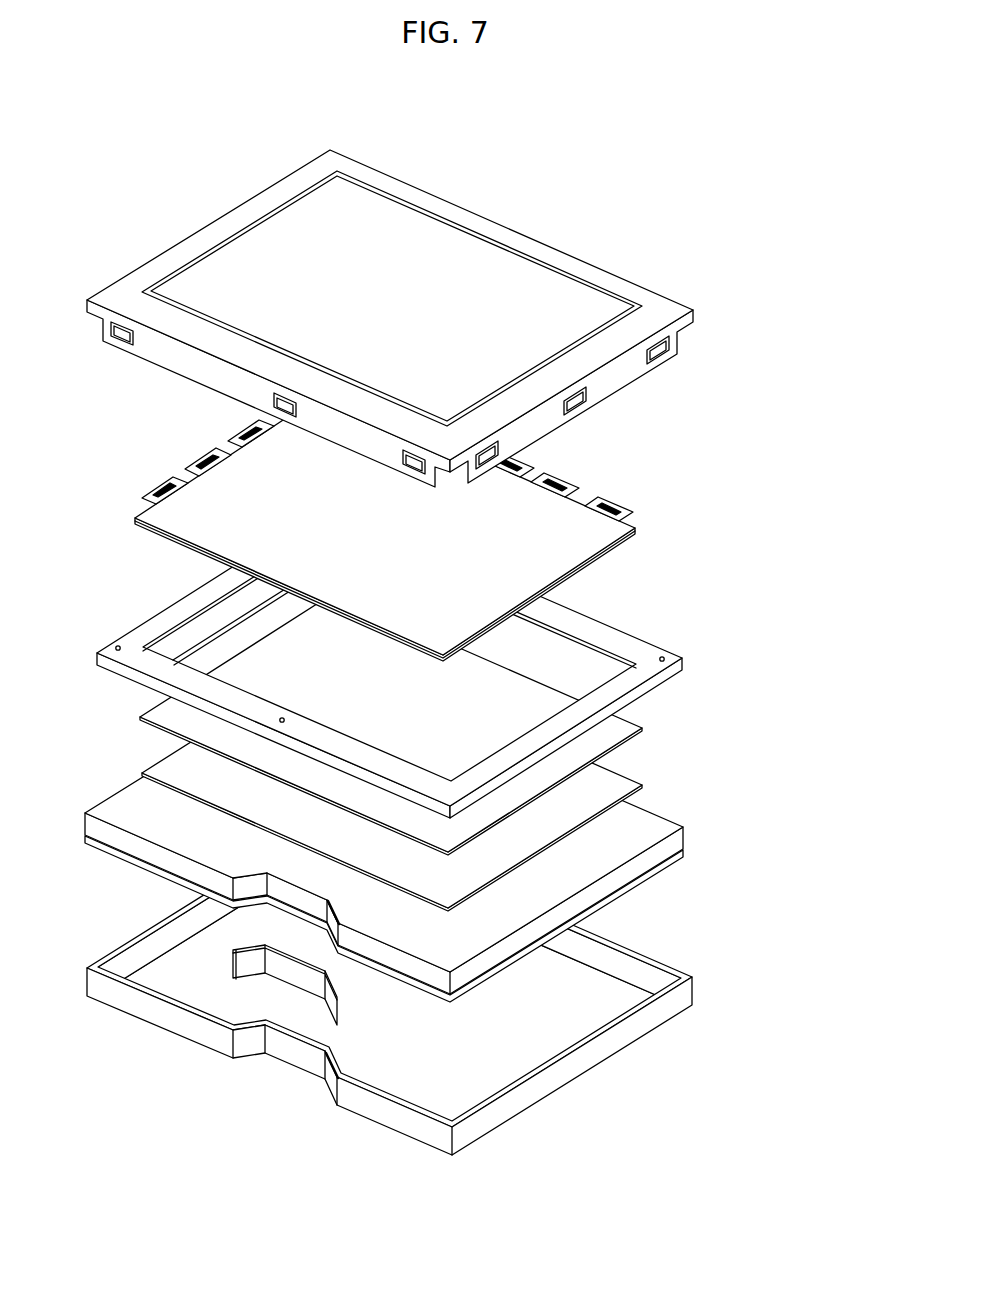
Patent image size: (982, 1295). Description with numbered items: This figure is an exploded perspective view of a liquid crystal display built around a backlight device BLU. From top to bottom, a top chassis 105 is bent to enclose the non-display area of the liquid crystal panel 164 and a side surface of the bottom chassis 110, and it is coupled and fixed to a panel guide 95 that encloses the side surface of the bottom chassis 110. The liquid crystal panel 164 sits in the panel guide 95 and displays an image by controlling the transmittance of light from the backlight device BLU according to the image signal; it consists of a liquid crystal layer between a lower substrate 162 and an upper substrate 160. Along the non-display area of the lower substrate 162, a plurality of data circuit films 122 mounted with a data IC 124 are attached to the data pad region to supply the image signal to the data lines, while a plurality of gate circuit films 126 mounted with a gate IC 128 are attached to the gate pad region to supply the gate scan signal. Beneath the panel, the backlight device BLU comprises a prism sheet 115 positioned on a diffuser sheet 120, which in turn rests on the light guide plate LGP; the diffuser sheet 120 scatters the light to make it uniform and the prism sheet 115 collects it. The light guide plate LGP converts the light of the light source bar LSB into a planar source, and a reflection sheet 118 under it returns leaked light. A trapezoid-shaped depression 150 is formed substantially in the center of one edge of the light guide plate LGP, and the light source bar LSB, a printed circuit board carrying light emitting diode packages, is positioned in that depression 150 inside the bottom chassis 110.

The top chassis 105 is at (481, 222).
The gate circuit film 126 is at (158, 490).
The gate IC 128 is at (177, 482).
The data circuit film 122 is at (584, 500).
The data IC 124 is at (612, 503).
The upper substrate 160 is at (630, 525).
The lower substrate 162 is at (627, 547).
The liquid crystal panel 164 is at (733, 508).
The panel guide 95 is at (633, 640).
The prism sheet 115 is at (628, 718).
The diffuser sheet 120 is at (628, 778).
The light guide plate LGP is at (681, 840).
The reflection sheet 118 is at (681, 853).
The bottom chassis 110 is at (656, 952).
The backlight device BLU is at (754, 685).
The depression 150 is at (272, 902).
The light source bar LSB is at (303, 988).